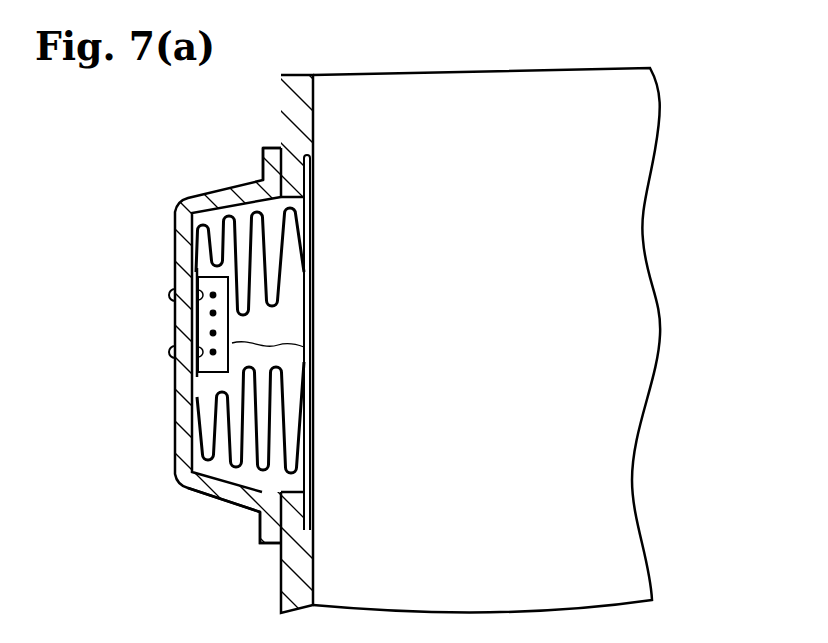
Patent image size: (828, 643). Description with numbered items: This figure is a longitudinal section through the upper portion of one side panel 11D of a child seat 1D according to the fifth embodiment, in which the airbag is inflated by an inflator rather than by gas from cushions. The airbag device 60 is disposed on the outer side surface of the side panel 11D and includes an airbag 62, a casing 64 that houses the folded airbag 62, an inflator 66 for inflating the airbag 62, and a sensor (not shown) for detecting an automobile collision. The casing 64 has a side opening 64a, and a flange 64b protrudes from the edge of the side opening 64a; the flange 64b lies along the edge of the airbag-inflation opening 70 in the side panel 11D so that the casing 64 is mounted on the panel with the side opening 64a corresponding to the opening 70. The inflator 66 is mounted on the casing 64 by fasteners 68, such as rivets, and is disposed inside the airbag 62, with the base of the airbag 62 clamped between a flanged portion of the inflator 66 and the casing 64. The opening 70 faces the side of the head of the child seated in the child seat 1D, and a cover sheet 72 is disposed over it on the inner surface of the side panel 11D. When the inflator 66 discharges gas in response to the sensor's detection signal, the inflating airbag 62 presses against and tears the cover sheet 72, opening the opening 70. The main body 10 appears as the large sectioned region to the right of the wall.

The body / housing case 10 is at (625, 108).
The child seat 1D is at (661, 366).
The side panel 11D is at (313, 102).
The airbag device 60 is at (187, 188).
The airbag 62 is at (280, 294).
The casing 64 is at (173, 453).
The side opening 64a is at (256, 480).
The flange 64b is at (260, 155).
The inflator 66 is at (313, 343).
The fasteners 68 is at (165, 295).
The airbag-inflation opening 70 is at (313, 207).
The cover sheet 72 is at (313, 462).